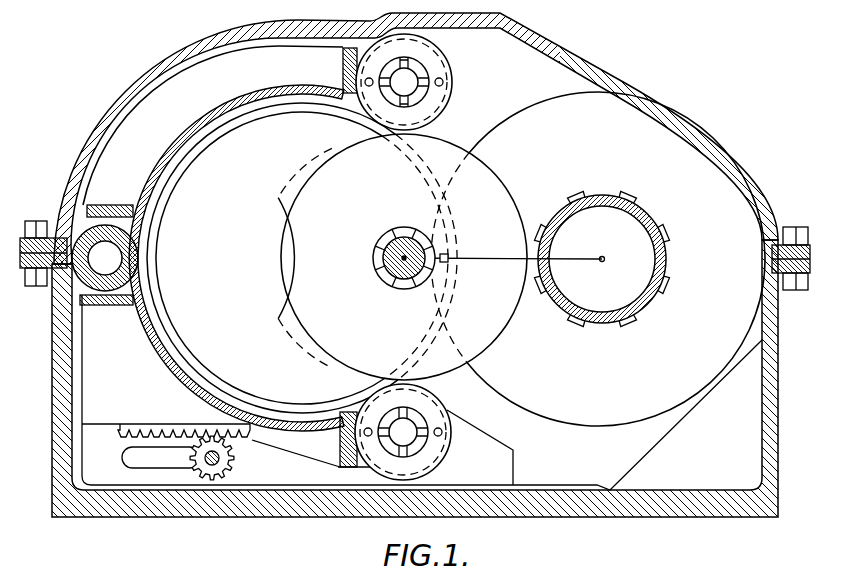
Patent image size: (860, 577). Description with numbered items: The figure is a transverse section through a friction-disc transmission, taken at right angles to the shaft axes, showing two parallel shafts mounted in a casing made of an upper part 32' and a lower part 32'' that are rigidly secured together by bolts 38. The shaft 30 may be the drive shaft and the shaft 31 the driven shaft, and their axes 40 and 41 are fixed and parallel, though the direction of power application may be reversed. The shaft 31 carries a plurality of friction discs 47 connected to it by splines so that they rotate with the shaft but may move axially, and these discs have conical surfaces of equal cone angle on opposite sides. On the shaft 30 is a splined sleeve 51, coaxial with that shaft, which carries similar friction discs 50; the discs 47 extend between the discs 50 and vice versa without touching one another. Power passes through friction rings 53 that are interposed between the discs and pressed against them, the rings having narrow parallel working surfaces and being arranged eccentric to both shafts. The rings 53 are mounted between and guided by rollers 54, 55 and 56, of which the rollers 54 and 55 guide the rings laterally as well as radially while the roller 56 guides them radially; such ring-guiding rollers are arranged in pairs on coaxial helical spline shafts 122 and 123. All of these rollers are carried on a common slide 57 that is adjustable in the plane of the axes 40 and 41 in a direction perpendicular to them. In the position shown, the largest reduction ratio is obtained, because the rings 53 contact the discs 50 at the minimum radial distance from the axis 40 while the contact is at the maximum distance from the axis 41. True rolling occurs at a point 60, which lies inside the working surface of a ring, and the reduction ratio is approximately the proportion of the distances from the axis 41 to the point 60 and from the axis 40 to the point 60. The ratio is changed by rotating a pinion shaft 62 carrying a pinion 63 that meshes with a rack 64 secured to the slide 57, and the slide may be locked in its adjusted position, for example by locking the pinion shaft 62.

The drive shaft 30 is at (401, 236).
The driven shaft 31 is at (645, 212).
The upper part of casing 32' is at (415, 138).
The lower part of casing 32'' is at (433, 378).
The bolts 38 is at (797, 291).
The axis of drive shaft 40 is at (404, 262).
The axis of driven shaft 41 is at (604, 261).
The friction discs 47 is at (623, 412).
The friction discs 50 is at (440, 152).
The splined sleeve 51 is at (376, 238).
The friction rings 53 is at (226, 398).
The roller 54 is at (424, 80).
The roller 55 is at (449, 462).
The roller 56 is at (106, 291).
The slide 57 is at (297, 473).
The rolling point 60 is at (449, 256).
The pinion shaft 62 is at (209, 467).
The pinion 63 is at (236, 461).
The rack 64 is at (248, 431).
The helical spline shaft 122 is at (410, 106).
The helical spline shaft 123 is at (407, 62).